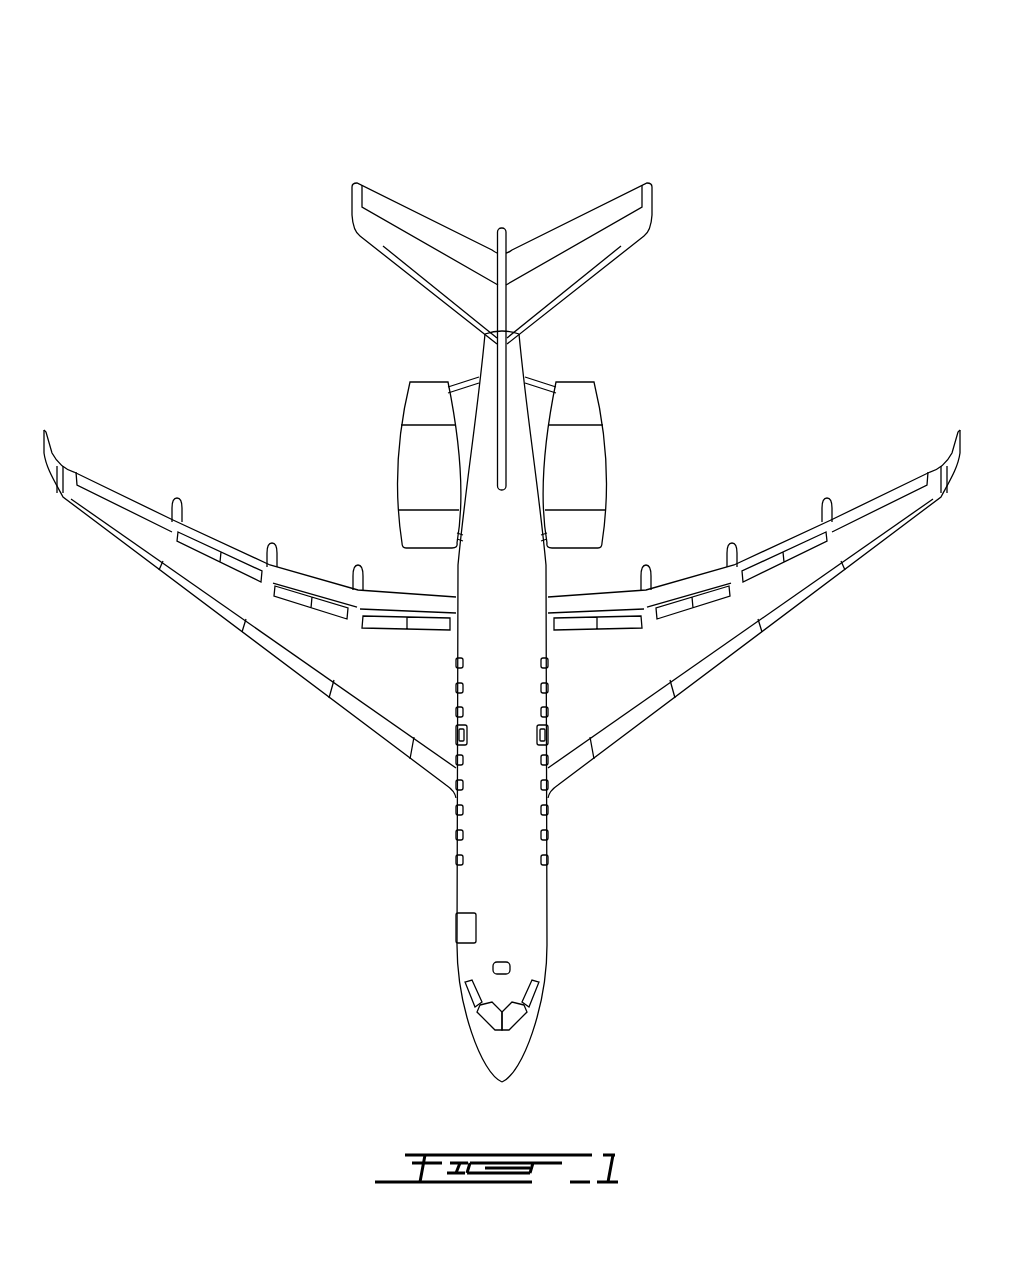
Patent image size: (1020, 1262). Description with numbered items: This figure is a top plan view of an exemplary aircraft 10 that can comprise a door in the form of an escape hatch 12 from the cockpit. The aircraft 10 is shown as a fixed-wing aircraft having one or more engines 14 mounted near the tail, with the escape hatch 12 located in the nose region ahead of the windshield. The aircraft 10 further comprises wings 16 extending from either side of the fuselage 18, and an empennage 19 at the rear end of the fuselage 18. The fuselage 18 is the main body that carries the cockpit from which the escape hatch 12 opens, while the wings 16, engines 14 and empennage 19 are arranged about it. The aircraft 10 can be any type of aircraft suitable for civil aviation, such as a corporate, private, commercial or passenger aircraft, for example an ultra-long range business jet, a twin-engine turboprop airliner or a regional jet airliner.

The aircraft 10 is at (502, 542).
The escape hatch 12 is at (510, 968).
The engines 14 is at (410, 483).
The wings 16 is at (238, 676).
The fuselage 18 is at (513, 840).
The empennage 19 is at (647, 272).